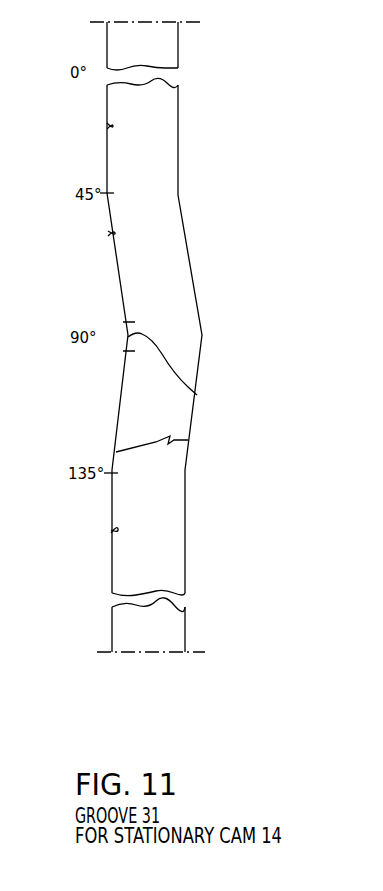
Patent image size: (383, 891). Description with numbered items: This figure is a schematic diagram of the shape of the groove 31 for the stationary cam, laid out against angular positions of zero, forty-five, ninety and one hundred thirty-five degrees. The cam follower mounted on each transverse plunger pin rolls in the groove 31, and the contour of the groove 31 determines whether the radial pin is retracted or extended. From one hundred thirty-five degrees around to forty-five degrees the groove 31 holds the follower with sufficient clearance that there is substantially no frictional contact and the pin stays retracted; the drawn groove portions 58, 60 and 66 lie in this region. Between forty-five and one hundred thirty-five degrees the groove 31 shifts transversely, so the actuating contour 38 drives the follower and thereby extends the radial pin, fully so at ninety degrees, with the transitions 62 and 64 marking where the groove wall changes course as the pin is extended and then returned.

The groove 31 is at (158, 138).
The actuating contour 38 is at (177, 302).
The groove portion 58 is at (98, 127).
The groove portion 60 is at (99, 235).
The groove transition 62 is at (172, 369).
The groove transition 64 is at (165, 445).
The groove portion 66 is at (99, 538).